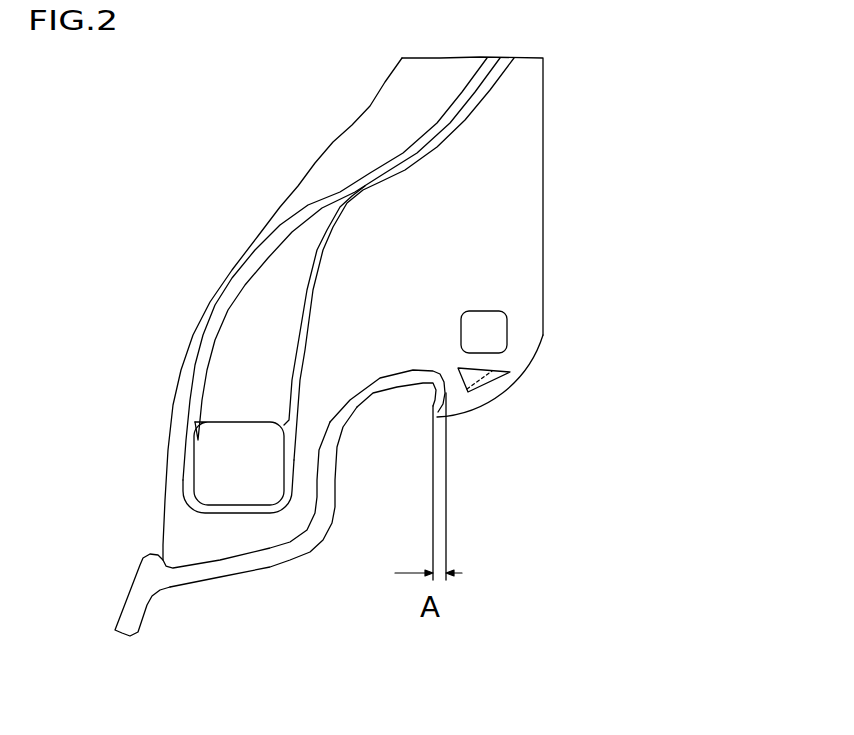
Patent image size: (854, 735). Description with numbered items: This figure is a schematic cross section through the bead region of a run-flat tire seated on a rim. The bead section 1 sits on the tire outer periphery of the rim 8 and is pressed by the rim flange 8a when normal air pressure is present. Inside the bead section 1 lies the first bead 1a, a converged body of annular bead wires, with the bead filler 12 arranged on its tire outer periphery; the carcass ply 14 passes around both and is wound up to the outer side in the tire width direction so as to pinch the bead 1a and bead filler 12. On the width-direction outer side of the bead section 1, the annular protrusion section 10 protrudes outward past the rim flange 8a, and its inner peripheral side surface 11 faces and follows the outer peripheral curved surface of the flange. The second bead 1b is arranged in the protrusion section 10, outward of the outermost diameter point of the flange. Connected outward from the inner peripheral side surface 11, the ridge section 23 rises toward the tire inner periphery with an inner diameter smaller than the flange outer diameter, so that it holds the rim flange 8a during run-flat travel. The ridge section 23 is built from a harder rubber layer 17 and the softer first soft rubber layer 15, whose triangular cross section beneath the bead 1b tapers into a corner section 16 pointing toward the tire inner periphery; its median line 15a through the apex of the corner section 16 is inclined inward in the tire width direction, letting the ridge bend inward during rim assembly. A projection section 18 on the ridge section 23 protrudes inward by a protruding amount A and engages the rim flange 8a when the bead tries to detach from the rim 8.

The bead section 1 is at (255, 313).
The first bead 1a is at (200, 467).
The second bead 1b is at (530, 315).
The rim 8 is at (122, 592).
The rim flange 8a is at (387, 364).
The annular protrusion section 10 is at (572, 217).
The inner peripheral side surface 11 is at (274, 485).
The bead filler 12 is at (327, 259).
The carcass ply 14 is at (340, 269).
The first soft rubber layer 15 is at (531, 359).
The median line 15a is at (485, 392).
The corner section 16 is at (473, 395).
The rubber layer 17 is at (505, 382).
The projection section 18 is at (419, 486).
The ridge section 23 is at (507, 398).